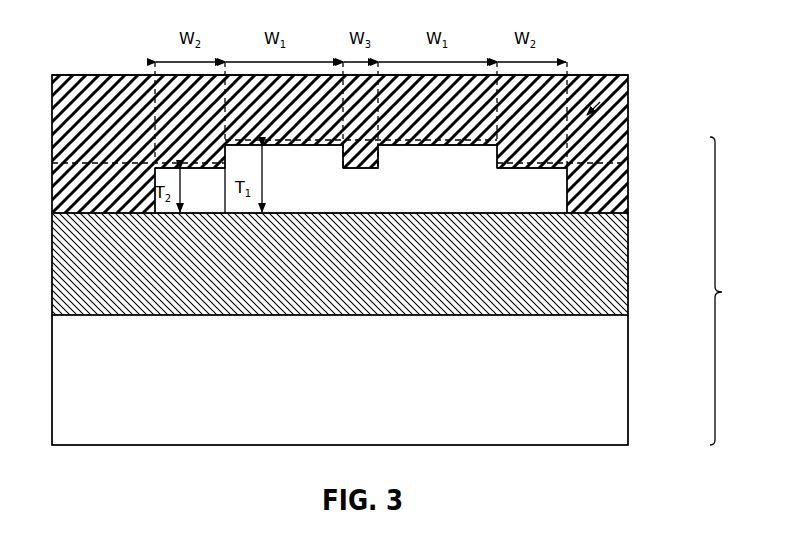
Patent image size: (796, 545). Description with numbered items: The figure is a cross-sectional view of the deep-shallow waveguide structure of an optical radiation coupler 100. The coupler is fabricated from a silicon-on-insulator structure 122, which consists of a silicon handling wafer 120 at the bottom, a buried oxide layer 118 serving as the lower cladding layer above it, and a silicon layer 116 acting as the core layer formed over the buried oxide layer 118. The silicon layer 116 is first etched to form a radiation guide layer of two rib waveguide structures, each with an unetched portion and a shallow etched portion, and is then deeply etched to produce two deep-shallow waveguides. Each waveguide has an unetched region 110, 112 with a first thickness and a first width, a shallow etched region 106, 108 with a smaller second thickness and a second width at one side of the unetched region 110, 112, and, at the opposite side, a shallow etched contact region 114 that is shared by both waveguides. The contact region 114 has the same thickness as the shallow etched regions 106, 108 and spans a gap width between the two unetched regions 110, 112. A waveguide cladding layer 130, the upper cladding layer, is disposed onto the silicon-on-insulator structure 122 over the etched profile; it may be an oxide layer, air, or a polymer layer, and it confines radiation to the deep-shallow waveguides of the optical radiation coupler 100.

The optical radiation coupler 100 is at (628, 74).
The shallow etched region 106 is at (200, 198).
The shallow etched region 108 is at (535, 190).
The unetched region 110 is at (292, 158).
The unetched region 112 is at (463, 160).
The shallow etched contact region 114 is at (383, 192).
The silicon layer 116 is at (655, 137).
The buried oxide layer 118 is at (655, 215).
The silicon handling wafer 120 is at (655, 445).
The silicon-on-insulator structure 122 is at (732, 291).
The waveguide cladding layer 130 is at (128, 112).